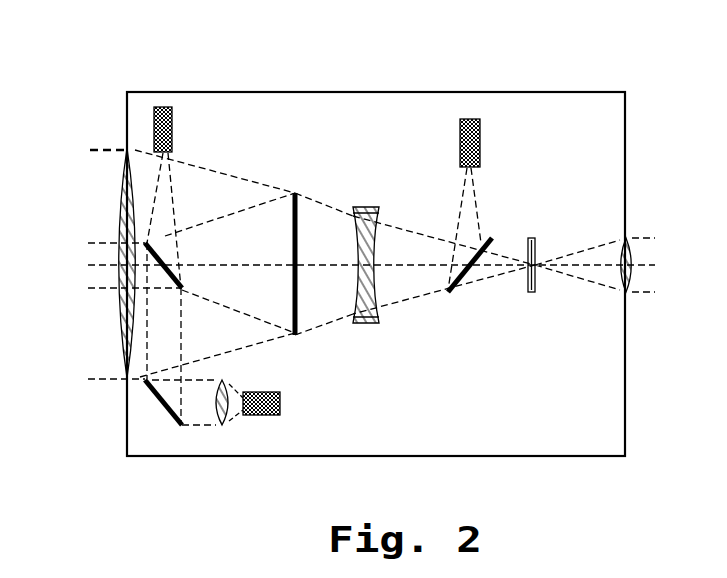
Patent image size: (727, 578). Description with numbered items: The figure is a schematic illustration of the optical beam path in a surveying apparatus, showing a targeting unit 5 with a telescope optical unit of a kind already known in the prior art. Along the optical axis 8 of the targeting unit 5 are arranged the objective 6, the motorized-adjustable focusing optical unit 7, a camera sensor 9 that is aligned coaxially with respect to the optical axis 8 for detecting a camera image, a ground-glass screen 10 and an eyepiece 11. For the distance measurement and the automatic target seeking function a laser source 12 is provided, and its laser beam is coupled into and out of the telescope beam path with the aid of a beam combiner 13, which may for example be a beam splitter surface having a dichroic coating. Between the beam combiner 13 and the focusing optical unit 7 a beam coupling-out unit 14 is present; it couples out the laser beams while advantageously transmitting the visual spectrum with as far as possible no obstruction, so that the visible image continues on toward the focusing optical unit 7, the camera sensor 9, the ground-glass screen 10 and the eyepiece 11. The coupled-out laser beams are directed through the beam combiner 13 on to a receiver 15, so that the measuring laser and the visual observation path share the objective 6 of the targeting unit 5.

The targeting unit 5 is at (148, 70).
The objective 6 is at (122, 318).
The focusing optical unit 7 is at (369, 204).
The optical axis 8 is at (270, 264).
The camera sensor 9 is at (481, 124).
The ground-glass screen 10 is at (532, 237).
The eyepiece 11 is at (631, 240).
The laser source 12 is at (176, 129).
The beam combiner 13 is at (147, 240).
The beam coupling-out unit 14 is at (297, 203).
The receiver 15 is at (279, 415).